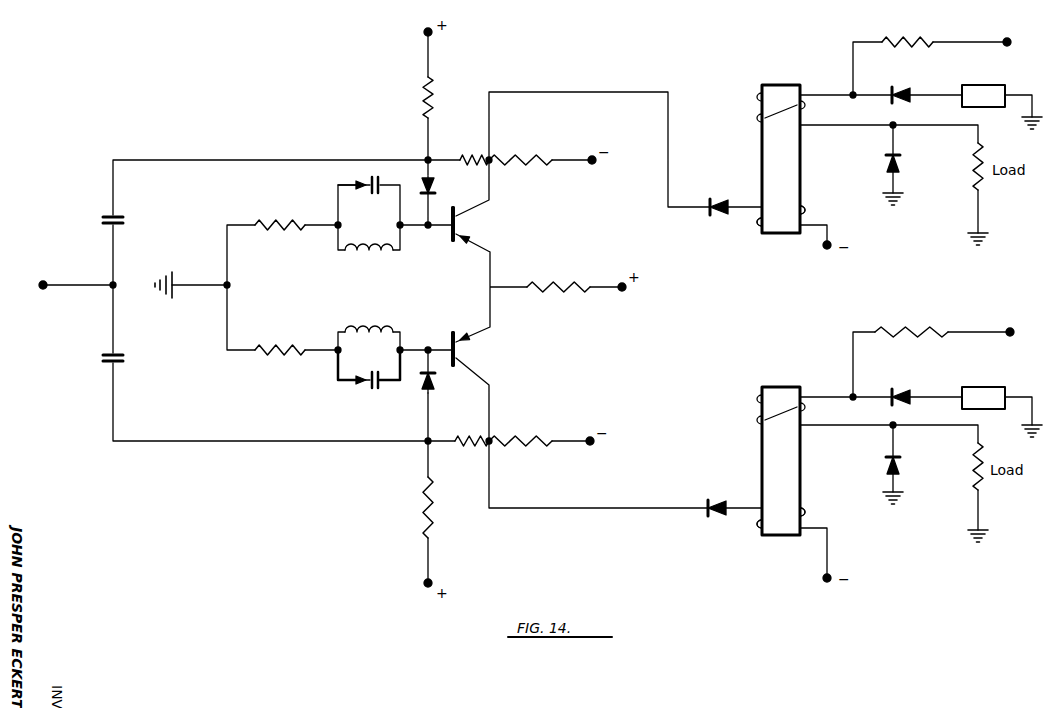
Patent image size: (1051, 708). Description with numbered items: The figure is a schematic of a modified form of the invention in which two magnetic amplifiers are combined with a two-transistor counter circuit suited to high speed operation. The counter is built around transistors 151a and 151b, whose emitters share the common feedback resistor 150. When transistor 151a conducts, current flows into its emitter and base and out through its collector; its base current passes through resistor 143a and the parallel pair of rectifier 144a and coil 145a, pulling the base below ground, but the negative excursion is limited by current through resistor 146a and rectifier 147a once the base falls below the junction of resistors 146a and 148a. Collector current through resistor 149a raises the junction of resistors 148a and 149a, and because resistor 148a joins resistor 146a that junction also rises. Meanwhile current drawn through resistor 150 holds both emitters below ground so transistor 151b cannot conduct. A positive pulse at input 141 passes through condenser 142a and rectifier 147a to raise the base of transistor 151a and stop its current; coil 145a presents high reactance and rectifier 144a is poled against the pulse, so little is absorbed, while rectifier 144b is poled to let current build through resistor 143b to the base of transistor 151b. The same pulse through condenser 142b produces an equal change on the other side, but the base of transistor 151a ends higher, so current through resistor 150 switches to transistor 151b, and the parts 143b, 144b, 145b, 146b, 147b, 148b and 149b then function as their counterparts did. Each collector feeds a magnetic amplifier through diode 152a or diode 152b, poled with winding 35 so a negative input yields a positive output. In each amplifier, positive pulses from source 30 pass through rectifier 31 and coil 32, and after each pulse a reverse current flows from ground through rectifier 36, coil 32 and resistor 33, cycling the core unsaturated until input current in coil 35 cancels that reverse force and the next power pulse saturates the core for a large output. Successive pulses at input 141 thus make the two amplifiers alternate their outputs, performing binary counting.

The input 141 is at (44, 284).
The condenser 142a is at (102, 221).
The condenser 142b is at (105, 362).
The resistor 143a is at (292, 220).
The resistor 143b is at (278, 356).
The rectifier 144a is at (372, 182).
The rectifier 144b is at (368, 386).
The coil 145a is at (370, 254).
The coil 145b is at (366, 328).
The resistor 146a is at (432, 94).
The resistor 146b is at (432, 520).
The rectifier 147a is at (433, 188).
The rectifier 147b is at (433, 376).
The resistor 148a is at (467, 155).
The resistor 148b is at (478, 447).
The resistor 149a is at (548, 155).
The resistor 149b is at (526, 447).
The resistor 150 is at (575, 280).
The transistor 151a is at (459, 225).
The transistor 151b is at (459, 352).
The diode 152a is at (720, 212).
The diode 152b is at (722, 504).
The source 30 is at (1000, 84).
The rectifier 31 is at (912, 90).
The coil 32 is at (758, 120).
The resistor 33 is at (918, 40).
The coil 35 is at (808, 213).
The rectifier 36 is at (886, 163).